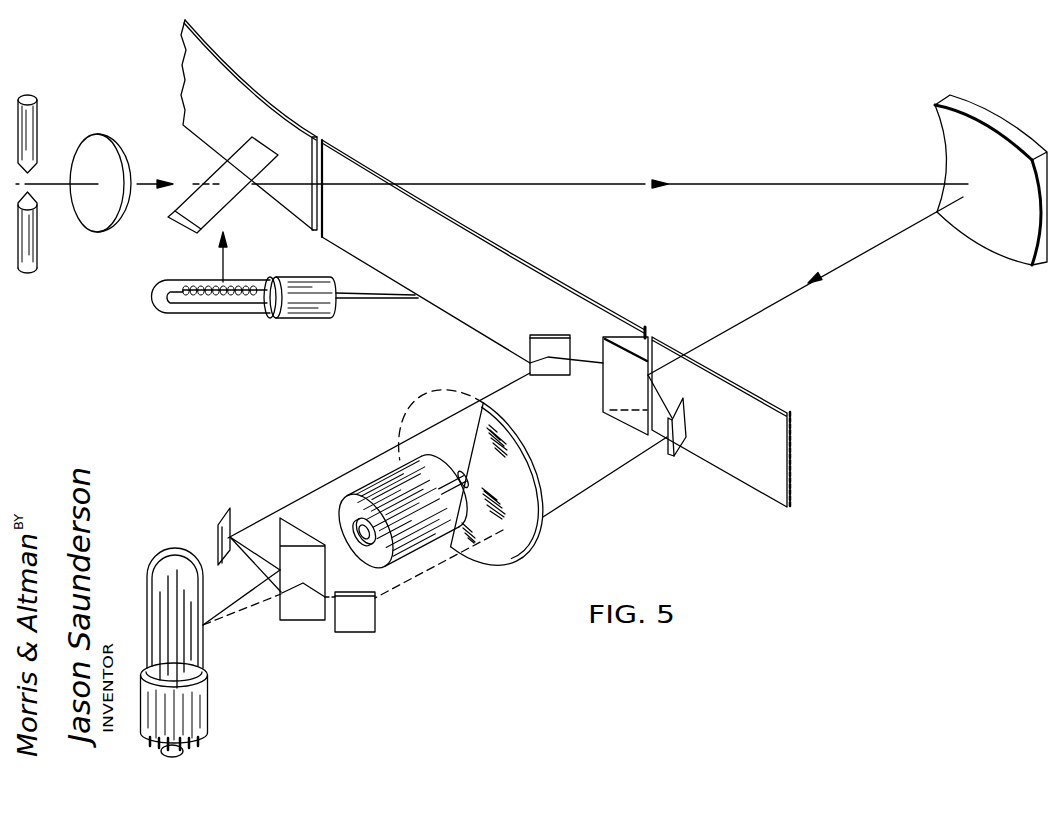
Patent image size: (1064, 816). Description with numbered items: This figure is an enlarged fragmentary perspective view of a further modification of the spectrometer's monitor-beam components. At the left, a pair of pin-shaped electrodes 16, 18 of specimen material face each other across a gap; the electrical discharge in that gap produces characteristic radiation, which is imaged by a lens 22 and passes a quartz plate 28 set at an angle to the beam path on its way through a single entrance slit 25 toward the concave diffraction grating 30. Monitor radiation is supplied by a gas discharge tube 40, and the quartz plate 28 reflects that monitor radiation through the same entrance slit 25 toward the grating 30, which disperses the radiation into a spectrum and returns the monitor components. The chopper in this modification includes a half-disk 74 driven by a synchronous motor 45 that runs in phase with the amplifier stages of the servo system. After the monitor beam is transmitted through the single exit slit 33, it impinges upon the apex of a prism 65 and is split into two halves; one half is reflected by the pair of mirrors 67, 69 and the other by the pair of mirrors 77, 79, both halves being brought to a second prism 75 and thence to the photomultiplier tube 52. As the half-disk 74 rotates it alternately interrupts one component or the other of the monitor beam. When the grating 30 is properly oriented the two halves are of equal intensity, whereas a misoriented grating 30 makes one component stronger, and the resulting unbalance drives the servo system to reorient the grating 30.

The electrode 16 is at (35, 113).
The electrode 18 is at (30, 243).
The lens 22 is at (97, 150).
The single entrance slit 25 is at (322, 140).
The quartz plate 28 is at (220, 168).
The concave diffraction grating 30 is at (987, 132).
The single exit slit 33 is at (649, 332).
The gas discharge tube 40 is at (303, 303).
The synchronous motor 45 is at (390, 480).
The photomultiplier tube 52 is at (178, 556).
The prism 65 is at (621, 338).
The mirror 67 is at (555, 343).
The mirror 69 is at (681, 423).
The half-disk 74 is at (527, 520).
The prism 75 is at (297, 533).
The mirror 77 is at (232, 527).
The mirror 79 is at (363, 615).